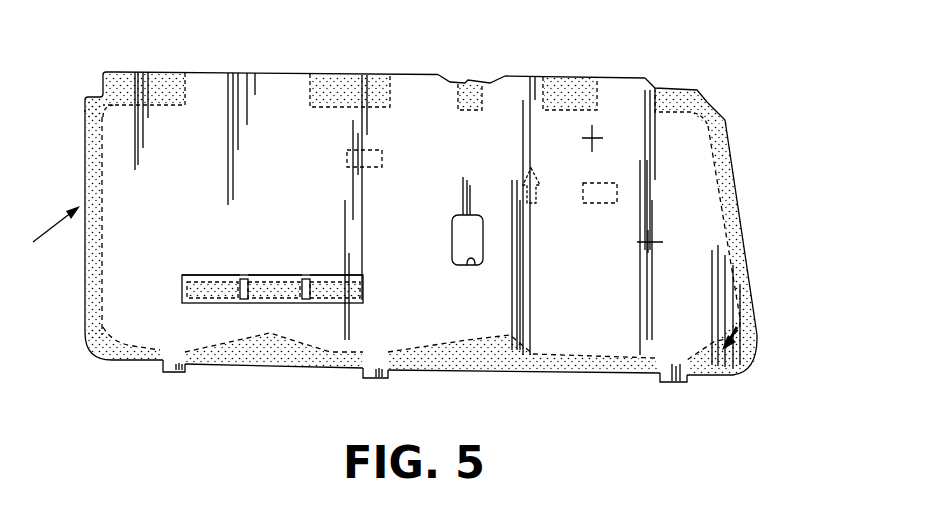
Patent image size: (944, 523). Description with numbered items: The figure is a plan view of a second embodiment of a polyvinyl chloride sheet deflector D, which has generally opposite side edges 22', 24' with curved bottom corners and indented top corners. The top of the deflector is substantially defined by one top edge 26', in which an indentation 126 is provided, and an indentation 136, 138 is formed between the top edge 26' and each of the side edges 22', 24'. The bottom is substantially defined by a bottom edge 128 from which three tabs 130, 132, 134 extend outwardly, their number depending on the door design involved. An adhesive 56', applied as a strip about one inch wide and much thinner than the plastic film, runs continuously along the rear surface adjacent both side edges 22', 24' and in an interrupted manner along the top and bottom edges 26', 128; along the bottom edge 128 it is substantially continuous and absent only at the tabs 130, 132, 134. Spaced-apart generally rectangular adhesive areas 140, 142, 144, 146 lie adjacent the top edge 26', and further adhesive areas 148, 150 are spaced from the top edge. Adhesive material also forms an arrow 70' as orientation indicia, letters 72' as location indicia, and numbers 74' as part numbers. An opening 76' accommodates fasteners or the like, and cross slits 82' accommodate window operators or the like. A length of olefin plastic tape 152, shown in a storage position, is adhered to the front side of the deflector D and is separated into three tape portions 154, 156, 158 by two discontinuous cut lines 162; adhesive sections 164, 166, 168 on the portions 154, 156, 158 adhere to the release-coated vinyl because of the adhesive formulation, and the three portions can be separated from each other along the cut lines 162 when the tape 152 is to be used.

The indentation 136 is at (103, 86).
The adhesive area 140 is at (146, 67).
The adhesive area 142 is at (322, 84).
The top edge 26' is at (276, 45).
The adhesive area 144 is at (458, 82).
The indentation 126 is at (470, 80).
The adhesive area 146 is at (566, 90).
The indentation 138 is at (698, 90).
The side edge 22' is at (59, 219).
The side edge 24' is at (747, 247).
The deflector D is at (48, 236).
The adhesive 56' is at (765, 315).
The numbers 74' is at (217, 201).
The letters 72' is at (272, 189).
The cross slits 82' is at (644, 199).
The arrow 70' is at (508, 176).
The adhesive area 150 is at (590, 200).
The adhesive area 148 is at (375, 148).
The opening 76' is at (474, 259).
The plastic tape 152 is at (372, 287).
The tape portion 154 is at (193, 278).
The tape portion 156 is at (272, 280).
The tape portion 158 is at (357, 280).
The cut lines 162 is at (308, 278).
The adhesive section 164 is at (203, 296).
The adhesive section 166 is at (266, 298).
The adhesive section 168 is at (338, 300).
The bottom edge 128 is at (513, 372).
The tab 130 is at (185, 372).
The tab 132 is at (385, 378).
The tab 134 is at (683, 381).